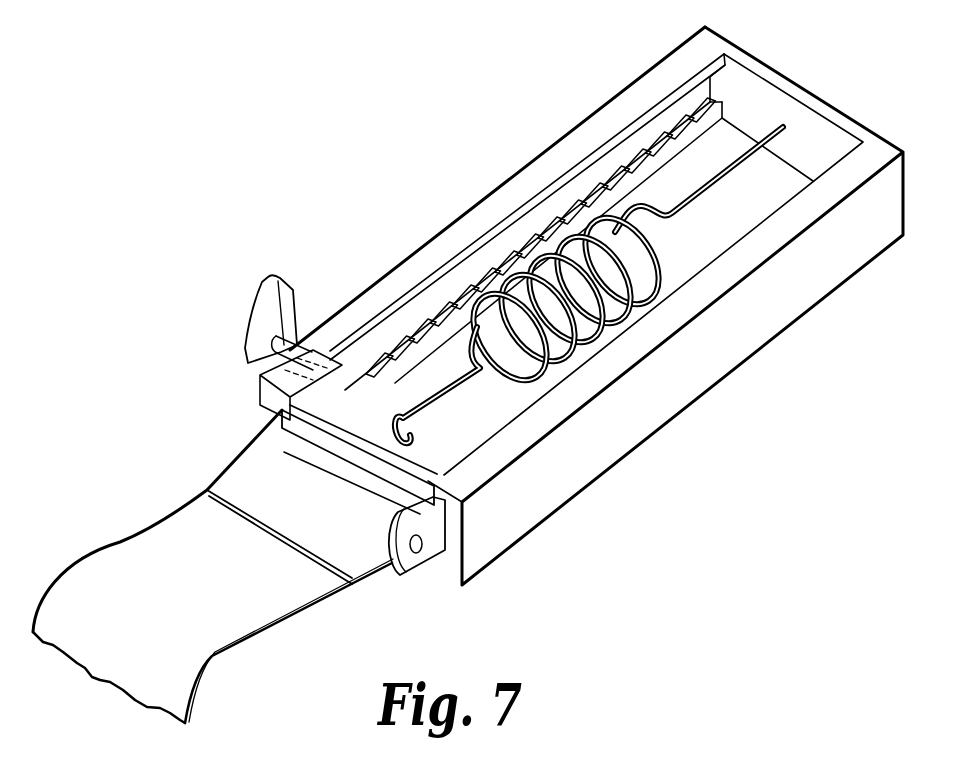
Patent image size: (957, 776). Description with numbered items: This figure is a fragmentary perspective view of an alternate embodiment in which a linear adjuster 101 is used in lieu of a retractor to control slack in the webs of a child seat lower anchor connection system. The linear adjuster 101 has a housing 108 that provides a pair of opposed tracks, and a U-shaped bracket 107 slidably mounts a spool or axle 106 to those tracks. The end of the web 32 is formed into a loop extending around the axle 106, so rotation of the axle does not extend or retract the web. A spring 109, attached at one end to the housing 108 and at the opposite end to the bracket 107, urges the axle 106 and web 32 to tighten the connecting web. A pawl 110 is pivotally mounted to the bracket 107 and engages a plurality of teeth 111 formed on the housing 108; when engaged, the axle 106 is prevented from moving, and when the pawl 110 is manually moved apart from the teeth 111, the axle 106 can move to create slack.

The web 32 is at (118, 577).
The linear adjuster 101 is at (595, 438).
The axle 106 is at (416, 556).
The U-shaped bracket 107 is at (332, 447).
The housing 108 is at (504, 203).
The spring 109 is at (646, 292).
The pawl 110 is at (362, 378).
The teeth 111 is at (470, 292).